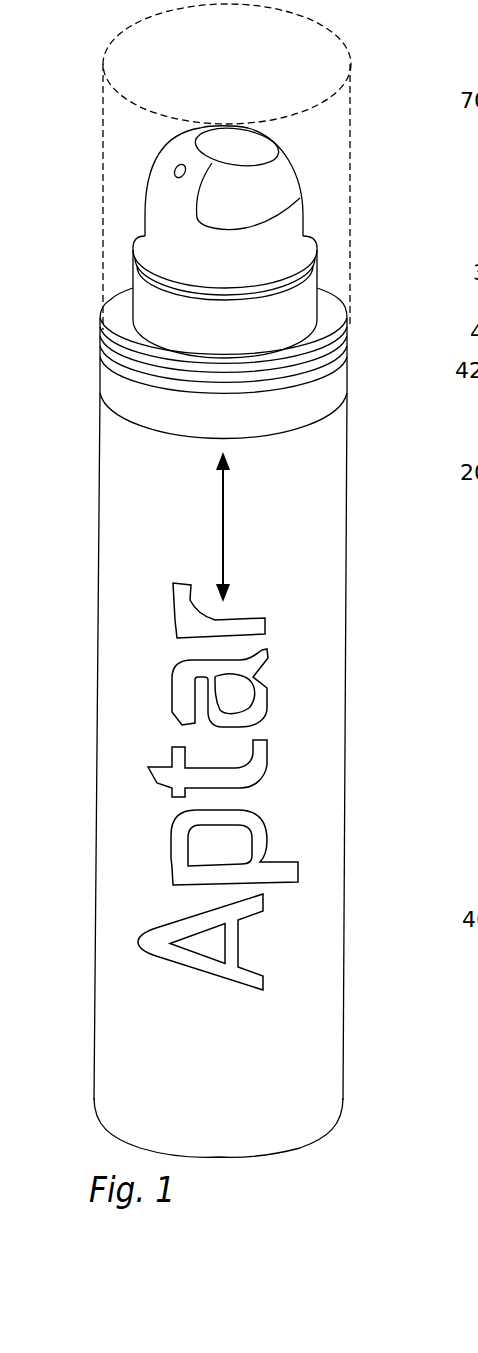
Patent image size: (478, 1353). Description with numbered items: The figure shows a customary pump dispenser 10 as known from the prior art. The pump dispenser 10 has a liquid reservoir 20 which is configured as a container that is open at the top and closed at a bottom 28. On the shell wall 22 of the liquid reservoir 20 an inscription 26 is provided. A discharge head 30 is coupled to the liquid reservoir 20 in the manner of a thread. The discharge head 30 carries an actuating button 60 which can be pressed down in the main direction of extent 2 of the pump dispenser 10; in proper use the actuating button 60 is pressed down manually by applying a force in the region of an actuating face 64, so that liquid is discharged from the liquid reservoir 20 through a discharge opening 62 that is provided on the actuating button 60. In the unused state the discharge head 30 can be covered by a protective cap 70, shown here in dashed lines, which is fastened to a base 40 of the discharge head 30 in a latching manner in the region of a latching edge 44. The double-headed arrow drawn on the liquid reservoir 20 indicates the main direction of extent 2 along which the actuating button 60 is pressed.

The main direction of extent 2 is at (222, 525).
The pump dispenser 10 is at (398, 276).
The liquid reservoir 20 is at (263, 775).
The shell wall 22 is at (305, 688).
The inscription 26 is at (297, 877).
The bottom 28 is at (305, 1140).
The discharge head 30 is at (348, 370).
The base 40 is at (158, 406).
The latching edge 44 is at (152, 372).
The actuating button 60 is at (172, 255).
The discharge opening 62 is at (176, 173).
The actuating face 64 is at (255, 143).
The protective cap 70 is at (313, 22).